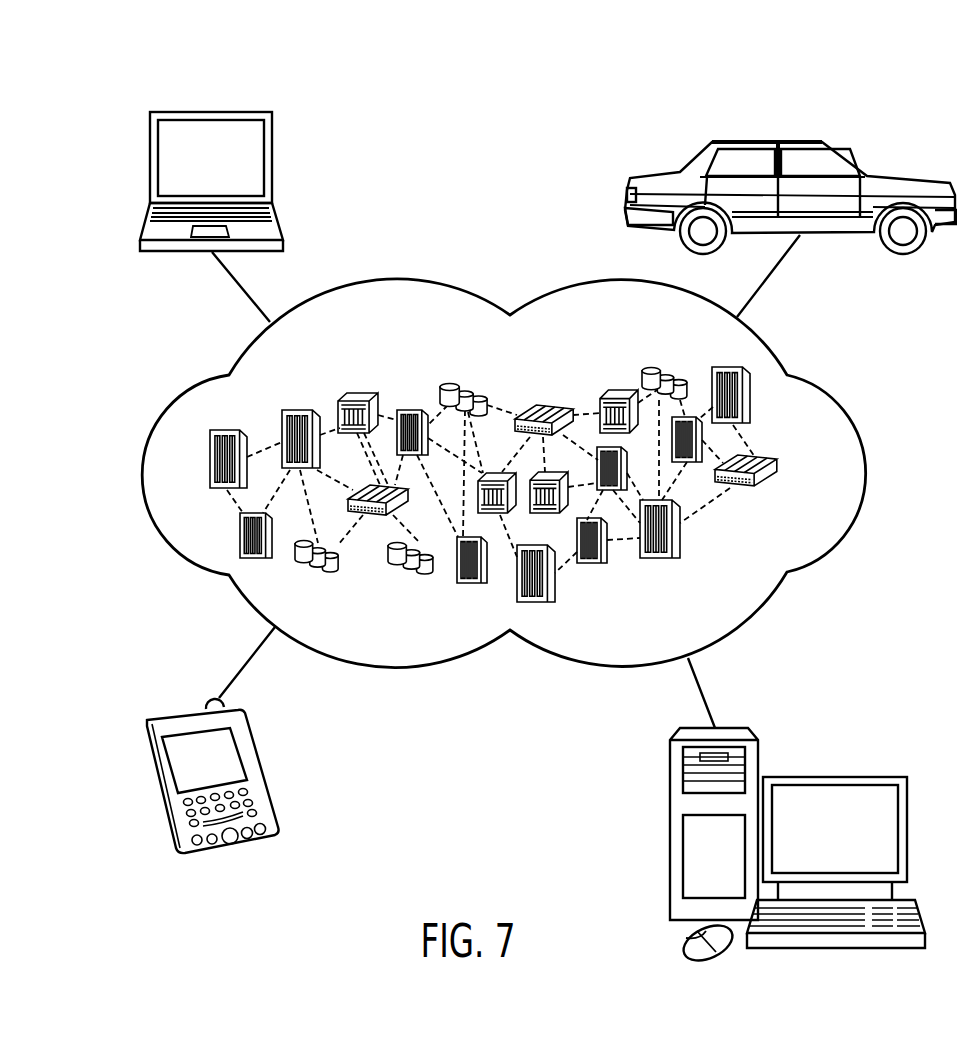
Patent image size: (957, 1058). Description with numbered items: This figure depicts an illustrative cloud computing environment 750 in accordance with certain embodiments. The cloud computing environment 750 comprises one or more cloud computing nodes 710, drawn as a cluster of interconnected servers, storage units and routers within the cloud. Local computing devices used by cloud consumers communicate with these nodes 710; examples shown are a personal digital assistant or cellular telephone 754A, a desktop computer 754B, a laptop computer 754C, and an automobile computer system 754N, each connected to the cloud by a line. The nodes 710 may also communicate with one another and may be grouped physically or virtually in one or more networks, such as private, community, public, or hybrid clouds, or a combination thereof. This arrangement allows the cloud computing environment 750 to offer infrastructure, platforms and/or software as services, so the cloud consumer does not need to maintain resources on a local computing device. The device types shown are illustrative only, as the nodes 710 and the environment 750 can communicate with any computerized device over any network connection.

The laptop computer 754C is at (210, 110).
The automobile computer system 754N is at (771, 140).
The cloud computing environment 750 is at (848, 375).
The cloud computing node 710 is at (785, 471).
The personal digital assistant (PDA) or cellular telephone 754A is at (190, 710).
The desktop computer 754B is at (833, 777).